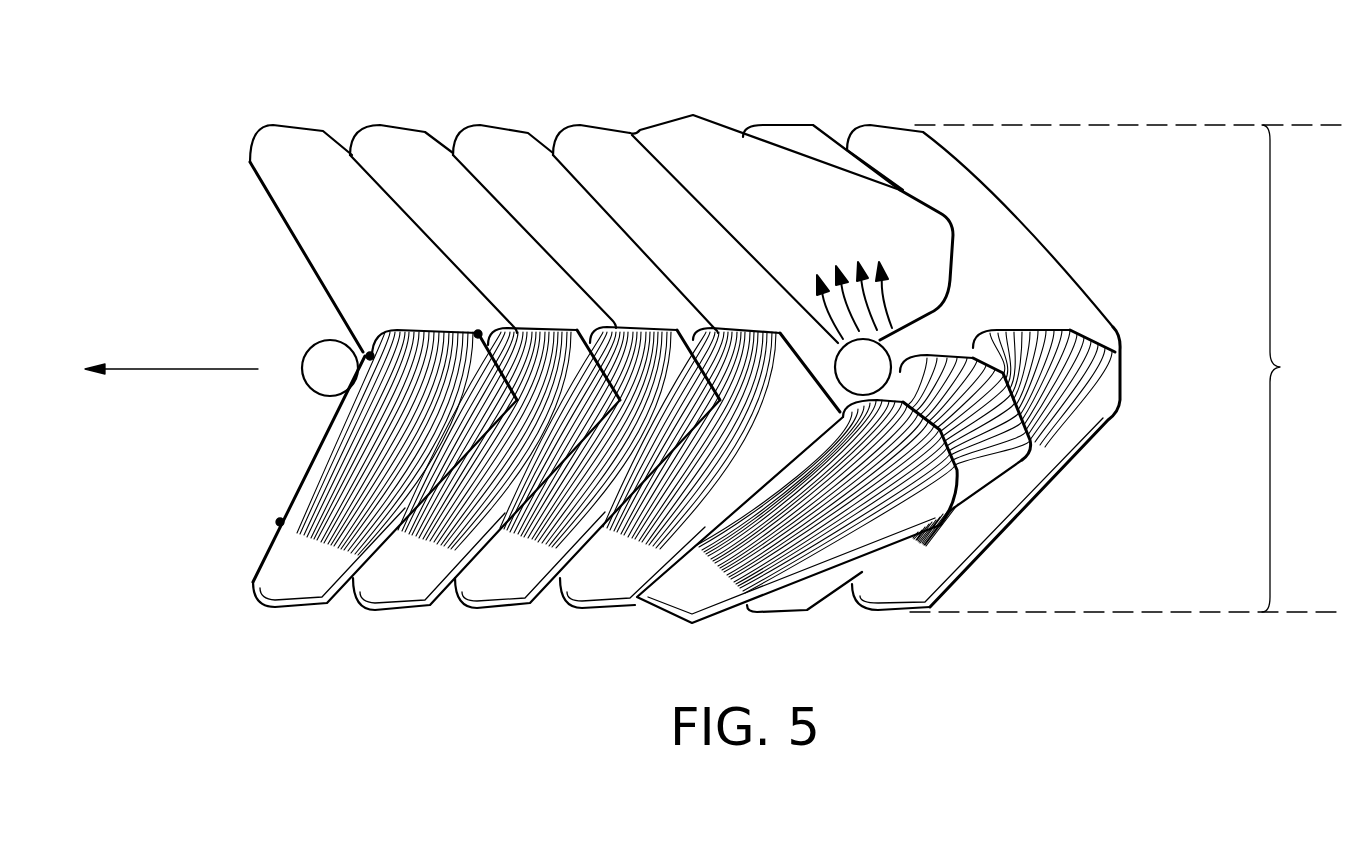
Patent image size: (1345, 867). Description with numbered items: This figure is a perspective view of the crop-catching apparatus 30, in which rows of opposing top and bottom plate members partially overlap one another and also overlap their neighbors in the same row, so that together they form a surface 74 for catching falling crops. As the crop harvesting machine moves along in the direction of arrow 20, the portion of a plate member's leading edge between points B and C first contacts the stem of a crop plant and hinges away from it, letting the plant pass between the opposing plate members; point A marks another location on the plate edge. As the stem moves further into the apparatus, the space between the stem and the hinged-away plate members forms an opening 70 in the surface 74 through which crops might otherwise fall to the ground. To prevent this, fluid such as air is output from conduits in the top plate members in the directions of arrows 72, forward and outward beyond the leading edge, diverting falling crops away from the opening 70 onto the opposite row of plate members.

The crop-catching apparatus 30 is at (577, 628).
The opening 70 is at (826, 345).
The arrows 72 is at (890, 296).
The arrow 20 is at (171, 385).
The surface 74 is at (1127, 368).
The point A is at (473, 317).
The point B is at (364, 338).
The point C is at (263, 517).